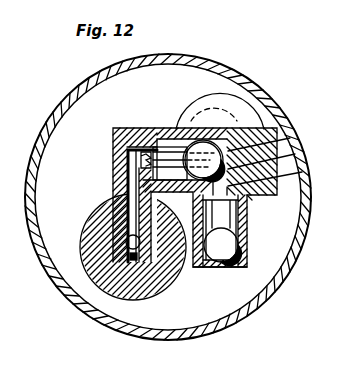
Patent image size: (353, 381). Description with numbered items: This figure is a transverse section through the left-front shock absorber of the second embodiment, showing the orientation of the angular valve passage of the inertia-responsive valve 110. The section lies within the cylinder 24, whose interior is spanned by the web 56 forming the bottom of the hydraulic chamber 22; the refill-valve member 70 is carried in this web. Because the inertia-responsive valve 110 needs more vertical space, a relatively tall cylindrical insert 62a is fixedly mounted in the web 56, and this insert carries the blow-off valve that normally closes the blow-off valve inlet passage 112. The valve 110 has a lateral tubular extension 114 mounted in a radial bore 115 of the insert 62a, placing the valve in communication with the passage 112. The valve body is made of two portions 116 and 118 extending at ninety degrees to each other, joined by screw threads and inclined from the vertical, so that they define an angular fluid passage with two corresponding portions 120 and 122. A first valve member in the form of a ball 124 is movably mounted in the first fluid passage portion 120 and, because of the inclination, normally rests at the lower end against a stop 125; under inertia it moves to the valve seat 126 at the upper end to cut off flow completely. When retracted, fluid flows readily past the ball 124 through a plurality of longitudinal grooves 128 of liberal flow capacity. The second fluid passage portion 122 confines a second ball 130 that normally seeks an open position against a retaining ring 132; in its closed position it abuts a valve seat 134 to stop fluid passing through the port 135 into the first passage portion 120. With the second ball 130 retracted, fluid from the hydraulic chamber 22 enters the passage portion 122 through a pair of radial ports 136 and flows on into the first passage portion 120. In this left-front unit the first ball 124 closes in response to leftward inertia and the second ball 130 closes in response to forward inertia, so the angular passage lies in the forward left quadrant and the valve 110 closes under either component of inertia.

The hydraulic chamber 22 is at (84, 305).
The cylinder 24 is at (50, 281).
The web 56 is at (187, 321).
The cylindrical insert 62a is at (137, 299).
The refill-valve member 70 is at (231, 97).
The inertia-responsive valve 110 is at (105, 148).
The blow-off valve inlet passage 112 is at (128, 240).
The lateral tubular extension 114 is at (127, 214).
The radial bore 115 is at (131, 195).
The valve body portion 116 is at (214, 140).
The valve body portion 118 is at (254, 249).
The first fluid passage portion 120 is at (170, 145).
The second fluid passage portion 122 is at (247, 227).
The ball 124 is at (274, 117).
The stop 125 is at (290, 138).
The valve seat 126 is at (137, 140).
The longitudinal grooves 128 is at (179, 128).
The second ball 130 is at (211, 267).
The retaining ring 132 is at (236, 267).
The valve seat 134 is at (302, 172).
The port 135 is at (295, 154).
The radial ports 136 is at (247, 208).